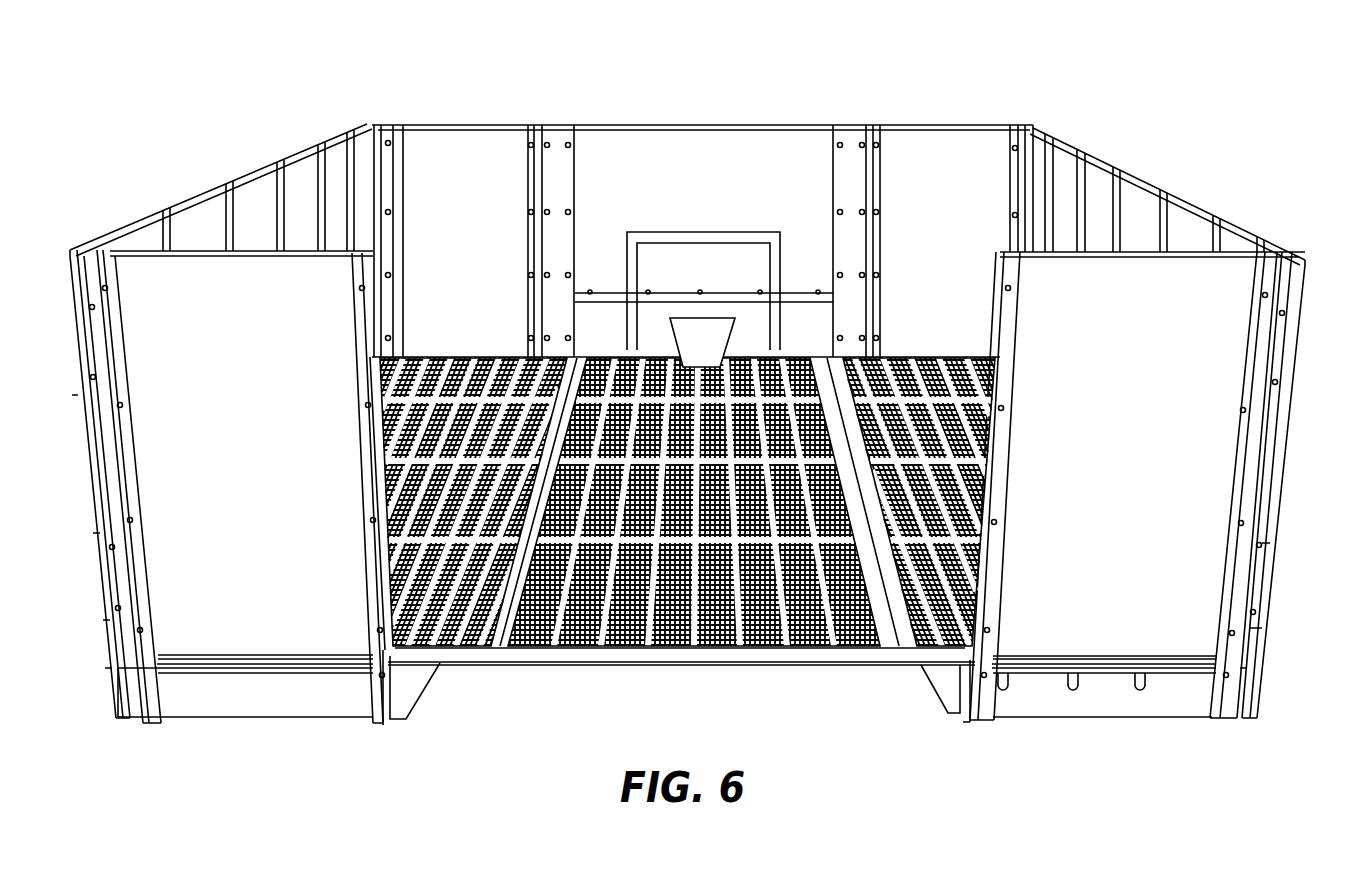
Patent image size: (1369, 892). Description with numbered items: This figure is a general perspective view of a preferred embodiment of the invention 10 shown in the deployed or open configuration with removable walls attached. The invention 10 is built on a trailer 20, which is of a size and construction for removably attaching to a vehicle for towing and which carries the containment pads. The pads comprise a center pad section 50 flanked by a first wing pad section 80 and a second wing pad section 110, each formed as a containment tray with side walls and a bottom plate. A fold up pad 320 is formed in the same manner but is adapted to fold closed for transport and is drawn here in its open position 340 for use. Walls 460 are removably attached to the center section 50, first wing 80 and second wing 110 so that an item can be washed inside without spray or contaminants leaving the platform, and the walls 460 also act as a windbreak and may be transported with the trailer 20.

The invention 10 is at (1184, 145).
The trailer 20 is at (1078, 723).
The center pad section 50 is at (637, 648).
The first wing pad section 80 is at (435, 660).
The second wing pad section 110 is at (943, 660).
The fold up pad 320 is at (708, 662).
The open position 340 is at (797, 645).
The wall 460 is at (1215, 512).